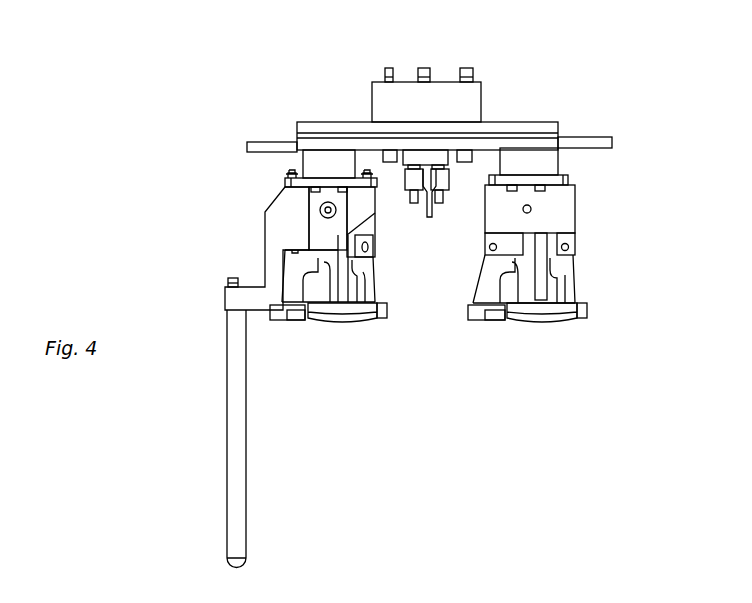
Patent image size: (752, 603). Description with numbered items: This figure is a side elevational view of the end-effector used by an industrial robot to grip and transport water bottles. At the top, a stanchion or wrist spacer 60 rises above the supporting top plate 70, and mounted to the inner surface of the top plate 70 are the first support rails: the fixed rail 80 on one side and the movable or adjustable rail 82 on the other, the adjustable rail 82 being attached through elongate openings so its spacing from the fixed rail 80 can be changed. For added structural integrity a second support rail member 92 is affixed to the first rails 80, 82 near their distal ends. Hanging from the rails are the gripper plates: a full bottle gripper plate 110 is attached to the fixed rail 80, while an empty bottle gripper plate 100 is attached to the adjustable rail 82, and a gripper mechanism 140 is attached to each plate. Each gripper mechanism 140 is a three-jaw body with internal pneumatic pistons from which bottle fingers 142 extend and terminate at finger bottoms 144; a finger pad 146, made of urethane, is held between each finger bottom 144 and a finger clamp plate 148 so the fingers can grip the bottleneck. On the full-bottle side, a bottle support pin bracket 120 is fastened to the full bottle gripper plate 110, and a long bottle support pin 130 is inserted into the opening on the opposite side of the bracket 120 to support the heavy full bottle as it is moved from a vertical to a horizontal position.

The stanchion or wrist spacer 60 is at (382, 105).
The supporting top plate 70 is at (247, 145).
The fixed rail 80 is at (307, 162).
The movable or adjustable rail 82 is at (543, 160).
The second support rail member 92 is at (313, 122).
The empty bottle gripper plate 100 is at (567, 180).
The full bottle gripper plate 110 is at (287, 182).
The bottle support pin bracket 120 is at (278, 240).
The bottle support pin 130 is at (227, 473).
The gripper mechanism 140 is at (368, 225).
The bottle finger 142 is at (565, 270).
The finger bottom 144 is at (550, 310).
The finger pad 146 is at (507, 320).
The finger clamp plate 148 is at (482, 322).